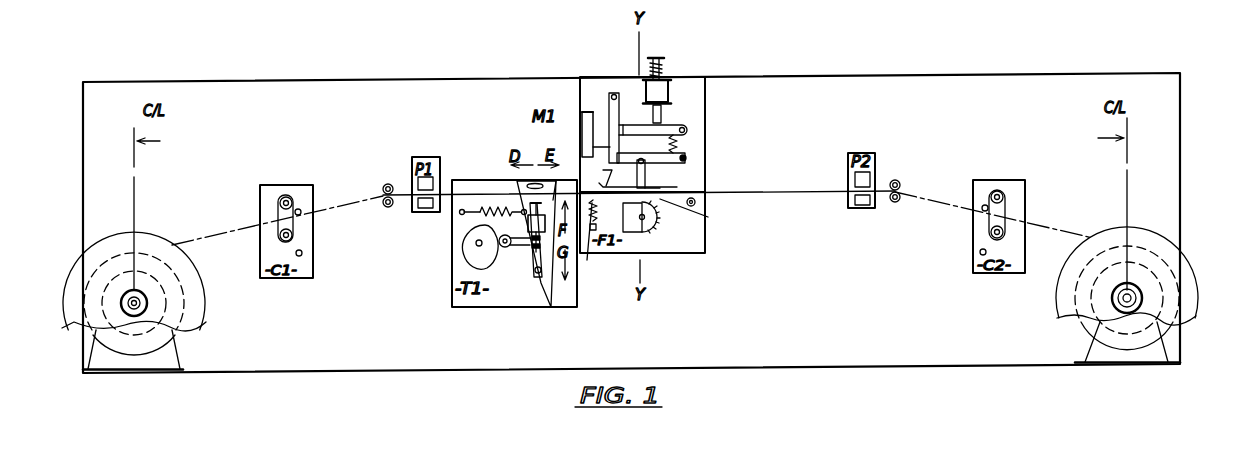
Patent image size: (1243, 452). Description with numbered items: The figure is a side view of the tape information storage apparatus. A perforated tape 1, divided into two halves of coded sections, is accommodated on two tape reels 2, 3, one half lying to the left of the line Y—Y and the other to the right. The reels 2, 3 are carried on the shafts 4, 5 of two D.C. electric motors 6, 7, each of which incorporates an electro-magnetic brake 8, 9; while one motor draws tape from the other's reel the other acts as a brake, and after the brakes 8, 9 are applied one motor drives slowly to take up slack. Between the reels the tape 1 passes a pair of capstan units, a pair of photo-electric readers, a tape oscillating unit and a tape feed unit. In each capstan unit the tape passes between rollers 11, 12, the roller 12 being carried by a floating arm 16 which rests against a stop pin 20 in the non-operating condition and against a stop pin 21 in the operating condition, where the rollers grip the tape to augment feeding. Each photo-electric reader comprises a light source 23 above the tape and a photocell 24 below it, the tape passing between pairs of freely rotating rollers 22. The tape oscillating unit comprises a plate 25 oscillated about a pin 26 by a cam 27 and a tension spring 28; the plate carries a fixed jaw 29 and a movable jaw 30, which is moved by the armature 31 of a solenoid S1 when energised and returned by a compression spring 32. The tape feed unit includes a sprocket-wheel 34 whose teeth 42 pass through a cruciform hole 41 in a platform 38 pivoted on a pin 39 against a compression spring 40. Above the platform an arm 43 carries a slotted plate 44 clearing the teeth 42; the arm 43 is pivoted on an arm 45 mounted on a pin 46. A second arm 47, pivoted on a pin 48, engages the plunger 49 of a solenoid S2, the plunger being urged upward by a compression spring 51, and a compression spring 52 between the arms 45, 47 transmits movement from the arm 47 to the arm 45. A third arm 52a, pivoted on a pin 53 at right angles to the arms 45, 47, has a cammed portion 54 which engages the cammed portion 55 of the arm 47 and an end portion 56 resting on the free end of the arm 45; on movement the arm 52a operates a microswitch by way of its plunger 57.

The tape 1 is at (1053, 231).
The tape reel 2 is at (70, 323).
The tape reel 3 is at (1183, 308).
The shaft 4 is at (125, 295).
The shaft 5 is at (1127, 287).
The D.C. electric motor 6 is at (152, 346).
The D.C. electric motor 7 is at (1108, 340).
The electro-magnetic brake 8 is at (132, 336).
The electro-magnetic brake 9 is at (1118, 324).
The roller 11 is at (289, 238).
The roller 12 is at (289, 200).
The floating arm 16 is at (293, 227).
The stop pin 20 is at (301, 212).
The stop pin 21 is at (301, 256).
The freely rotating rollers 22 is at (382, 199).
The light source 23 is at (418, 183).
The photocell 24 is at (418, 206).
The plate 25 is at (530, 258).
The pin 26 is at (537, 278).
The cam 27 is at (473, 262).
The tension spring 28 is at (490, 213).
The fixed jaw 29 is at (526, 182).
The jaw 30 is at (465, 204).
The armature 31 is at (563, 179).
The compression spring 32 is at (539, 256).
The tape feed sprocket-wheel 34 is at (648, 223).
The platform 38 is at (694, 218).
The pin 39 is at (695, 203).
The compression spring 40 is at (592, 241).
The cruciform hole 41 is at (601, 215).
The teeth 42 is at (641, 229).
The arm 43 is at (656, 174).
The plate 44 is at (677, 187).
The arm 45 is at (685, 168).
The pin 46 is at (687, 156).
The second arm 47 is at (655, 117).
The pin 48 is at (686, 130).
The plunger 49 is at (667, 105).
The compression spring 51 is at (662, 62).
The compression spring 52 is at (680, 141).
The third arm 52a is at (589, 112).
The pin 53 is at (611, 112).
The cammed portion 54 is at (628, 174).
The cammed portion 55 is at (628, 118).
The end portion 56 is at (596, 172).
The plunger 57 is at (582, 146).
The solenoid S1 is at (528, 225).
The solenoid S2 is at (648, 84).